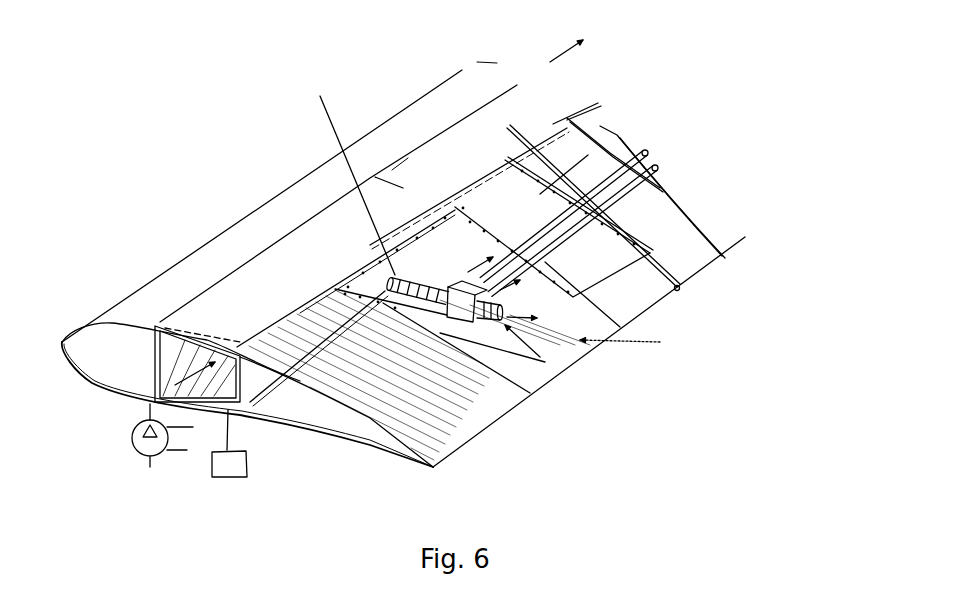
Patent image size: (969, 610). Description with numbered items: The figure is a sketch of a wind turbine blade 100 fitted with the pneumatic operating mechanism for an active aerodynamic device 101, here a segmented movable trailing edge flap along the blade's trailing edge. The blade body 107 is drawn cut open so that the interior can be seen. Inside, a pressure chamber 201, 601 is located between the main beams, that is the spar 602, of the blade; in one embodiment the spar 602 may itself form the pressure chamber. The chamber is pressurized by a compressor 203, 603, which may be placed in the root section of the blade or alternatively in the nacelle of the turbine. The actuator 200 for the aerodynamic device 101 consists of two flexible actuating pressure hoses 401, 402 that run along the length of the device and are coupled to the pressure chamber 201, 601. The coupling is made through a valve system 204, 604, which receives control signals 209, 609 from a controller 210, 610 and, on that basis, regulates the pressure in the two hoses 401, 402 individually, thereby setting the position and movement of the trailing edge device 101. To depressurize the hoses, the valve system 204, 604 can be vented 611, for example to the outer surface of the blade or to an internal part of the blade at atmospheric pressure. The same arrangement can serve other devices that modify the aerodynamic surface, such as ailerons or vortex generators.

The wind turbine blade 100 is at (465, 60).
The aerodynamic device 101 is at (630, 303).
The blade body 107 is at (507, 126).
The actuator 200 is at (654, 195).
The actuating pressure hose 401 is at (655, 148).
The actuating pressure hose 402 is at (668, 162).
The pressure chamber 201 is at (220, 248).
The pressure chamber 601 is at (245, 297).
The compressor 203 is at (145, 470).
The compressor 603 is at (140, 452).
The valve system 204 is at (503, 380).
The valve system 604 is at (470, 330).
The control signals 209 is at (286, 434).
The control signals 609 is at (233, 429).
The controller 210 is at (250, 480).
The controller 610 is at (250, 480).
The spar 602 is at (153, 383).
The vent 611 is at (555, 382).